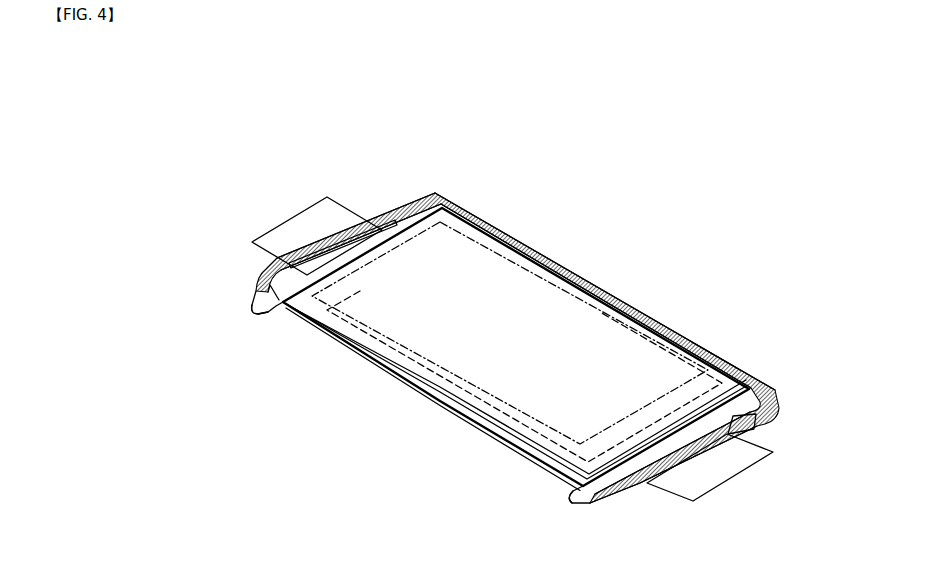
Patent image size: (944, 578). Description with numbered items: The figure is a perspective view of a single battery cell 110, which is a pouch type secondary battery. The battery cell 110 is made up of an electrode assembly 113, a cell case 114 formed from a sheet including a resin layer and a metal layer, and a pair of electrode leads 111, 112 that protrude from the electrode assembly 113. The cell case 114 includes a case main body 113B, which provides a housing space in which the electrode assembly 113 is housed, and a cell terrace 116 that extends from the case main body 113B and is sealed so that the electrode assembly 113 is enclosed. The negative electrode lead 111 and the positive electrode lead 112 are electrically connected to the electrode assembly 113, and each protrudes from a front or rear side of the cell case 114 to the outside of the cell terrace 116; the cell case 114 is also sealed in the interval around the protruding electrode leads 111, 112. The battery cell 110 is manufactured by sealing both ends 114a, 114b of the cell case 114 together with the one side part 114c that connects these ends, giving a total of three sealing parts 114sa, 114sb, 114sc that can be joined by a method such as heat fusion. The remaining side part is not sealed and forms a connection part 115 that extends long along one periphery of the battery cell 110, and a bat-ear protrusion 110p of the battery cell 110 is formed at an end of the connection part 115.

The battery cell 110 is at (483, 66).
The protrusion 110p is at (253, 307).
The negative electrode lead 111 is at (307, 226).
The positive electrode lead 112 is at (743, 475).
The electrode assembly 113 is at (547, 278).
The case main body 113B is at (473, 280).
The cell case 114 is at (767, 380).
The end of the cell case 114a is at (395, 203).
The end of the cell case 114b is at (638, 488).
The side part 114c is at (612, 296).
The sealing part 114sa is at (378, 219).
The sealing part 114sb is at (762, 422).
The sealing part 114sc is at (702, 347).
The connection part 115 is at (445, 408).
The cell terrace 116 is at (272, 292).